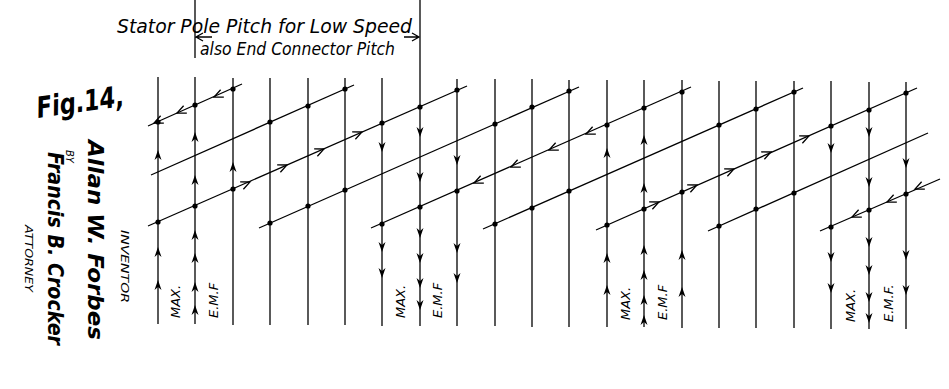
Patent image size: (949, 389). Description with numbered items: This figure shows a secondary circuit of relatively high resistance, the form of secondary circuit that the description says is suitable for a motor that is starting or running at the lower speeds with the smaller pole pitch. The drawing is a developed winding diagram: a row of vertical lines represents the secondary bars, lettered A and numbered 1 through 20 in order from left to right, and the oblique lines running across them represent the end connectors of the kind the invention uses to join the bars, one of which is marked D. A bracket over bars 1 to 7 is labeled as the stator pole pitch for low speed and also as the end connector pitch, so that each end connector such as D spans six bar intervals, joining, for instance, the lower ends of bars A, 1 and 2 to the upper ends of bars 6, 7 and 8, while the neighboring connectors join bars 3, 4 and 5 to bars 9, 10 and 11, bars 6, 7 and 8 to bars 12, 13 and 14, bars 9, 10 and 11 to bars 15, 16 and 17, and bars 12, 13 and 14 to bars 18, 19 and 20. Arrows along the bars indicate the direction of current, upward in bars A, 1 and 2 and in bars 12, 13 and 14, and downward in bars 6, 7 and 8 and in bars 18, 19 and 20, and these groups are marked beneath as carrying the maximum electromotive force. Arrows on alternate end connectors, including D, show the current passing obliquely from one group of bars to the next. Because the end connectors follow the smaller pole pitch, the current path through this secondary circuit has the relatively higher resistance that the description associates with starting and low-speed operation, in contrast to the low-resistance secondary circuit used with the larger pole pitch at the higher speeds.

The stator slot conductor A is at (157, 193).
The stator slot conductor 1 is at (195, 193).
The stator slot conductor 2 is at (233, 194).
The stator slot conductor 3 is at (270, 194).
The stator slot conductor 4 is at (308, 194).
The stator slot conductor 5 is at (345, 194).
The stator slot conductor 6 is at (382, 195).
The stator slot conductor 7 is at (420, 163).
The stator slot conductor 8 is at (457, 195).
The stator slot conductor 9 is at (495, 195).
The stator slot conductor 10 is at (532, 196).
The stator slot conductor 11 is at (568, 196).
The stator slot conductor 12 is at (606, 196).
The stator slot conductor 13 is at (643, 196).
The stator slot conductor 14 is at (681, 197).
The stator slot conductor 15 is at (718, 197).
The stator slot conductor 16 is at (756, 197).
The stator slot conductor 17 is at (794, 197).
The stator slot conductor 18 is at (831, 198).
The stator slot conductor 19 is at (868, 198).
The stator slot conductor 20 is at (906, 198).
The end connector D is at (307, 156).